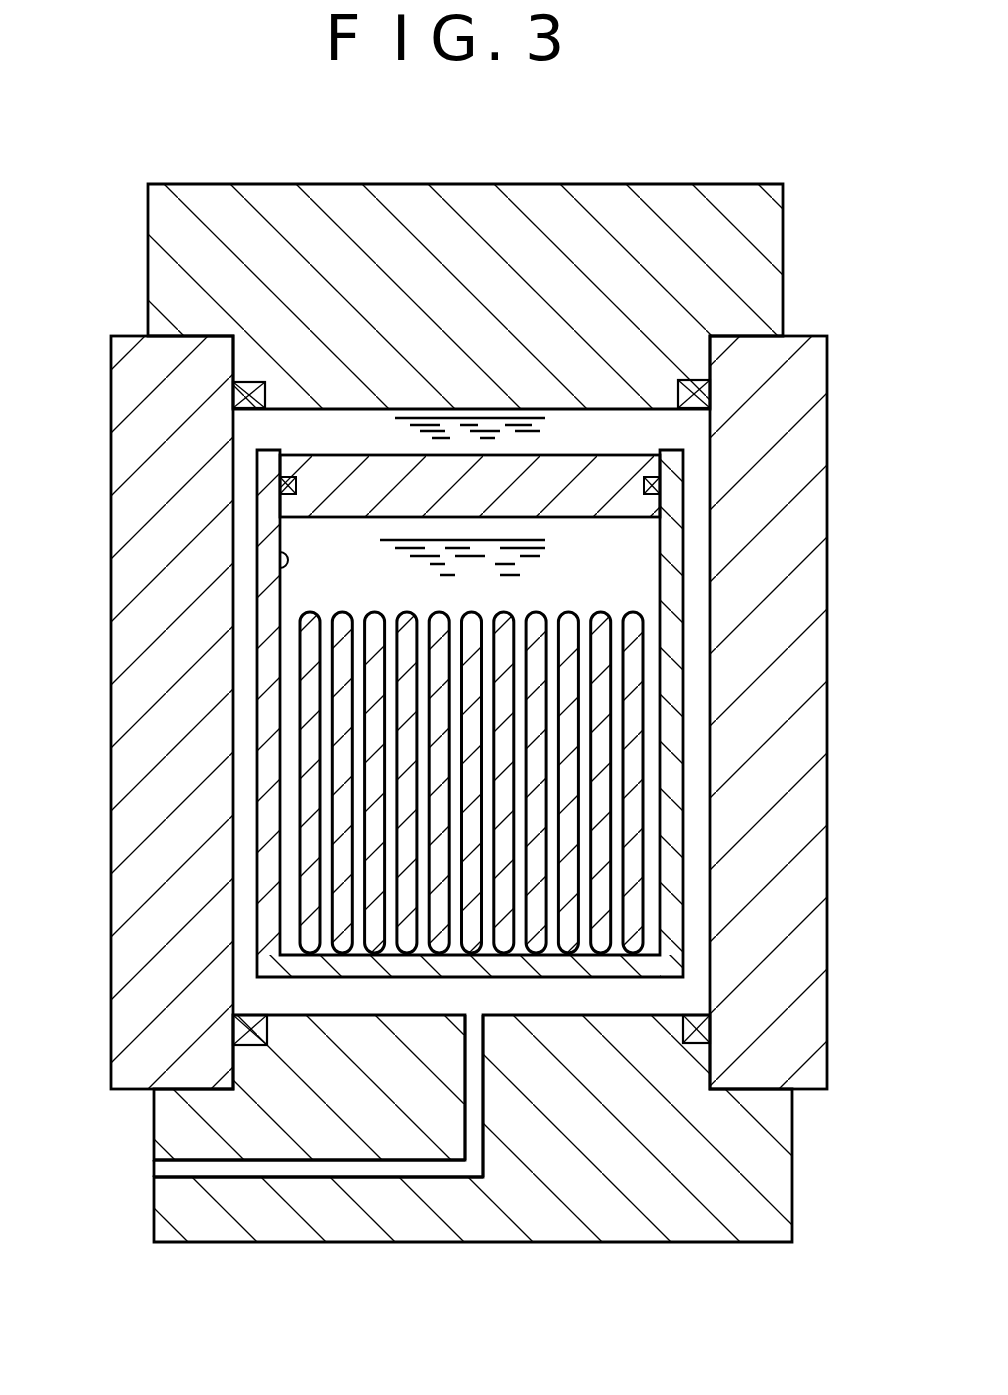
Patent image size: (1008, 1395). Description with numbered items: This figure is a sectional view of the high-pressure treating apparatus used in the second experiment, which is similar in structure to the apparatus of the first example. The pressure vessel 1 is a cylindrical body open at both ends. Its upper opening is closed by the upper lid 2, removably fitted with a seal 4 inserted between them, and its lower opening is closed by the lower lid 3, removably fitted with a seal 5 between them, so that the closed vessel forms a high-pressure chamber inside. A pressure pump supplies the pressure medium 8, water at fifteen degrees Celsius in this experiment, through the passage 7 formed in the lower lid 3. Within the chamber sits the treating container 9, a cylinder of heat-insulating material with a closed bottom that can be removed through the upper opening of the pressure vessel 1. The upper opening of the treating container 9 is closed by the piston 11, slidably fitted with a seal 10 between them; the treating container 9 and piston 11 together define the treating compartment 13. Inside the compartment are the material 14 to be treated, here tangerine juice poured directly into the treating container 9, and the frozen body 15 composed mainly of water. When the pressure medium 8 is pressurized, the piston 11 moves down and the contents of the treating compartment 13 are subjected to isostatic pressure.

The pressure vessel 1 is at (805, 497).
The upper lid 2 is at (150, 291).
The lower lid 3 is at (227, 1227).
The seal 4 is at (228, 400).
The seal 5 is at (240, 1033).
The passage 7 is at (157, 1171).
The pressure medium 8 is at (638, 417).
The treating container 9 is at (268, 690).
The seal 10 is at (290, 497).
The piston 11 is at (295, 465).
The treating compartment 13 is at (277, 575).
The material 14 is at (645, 565).
The frozen body 15 is at (597, 663).